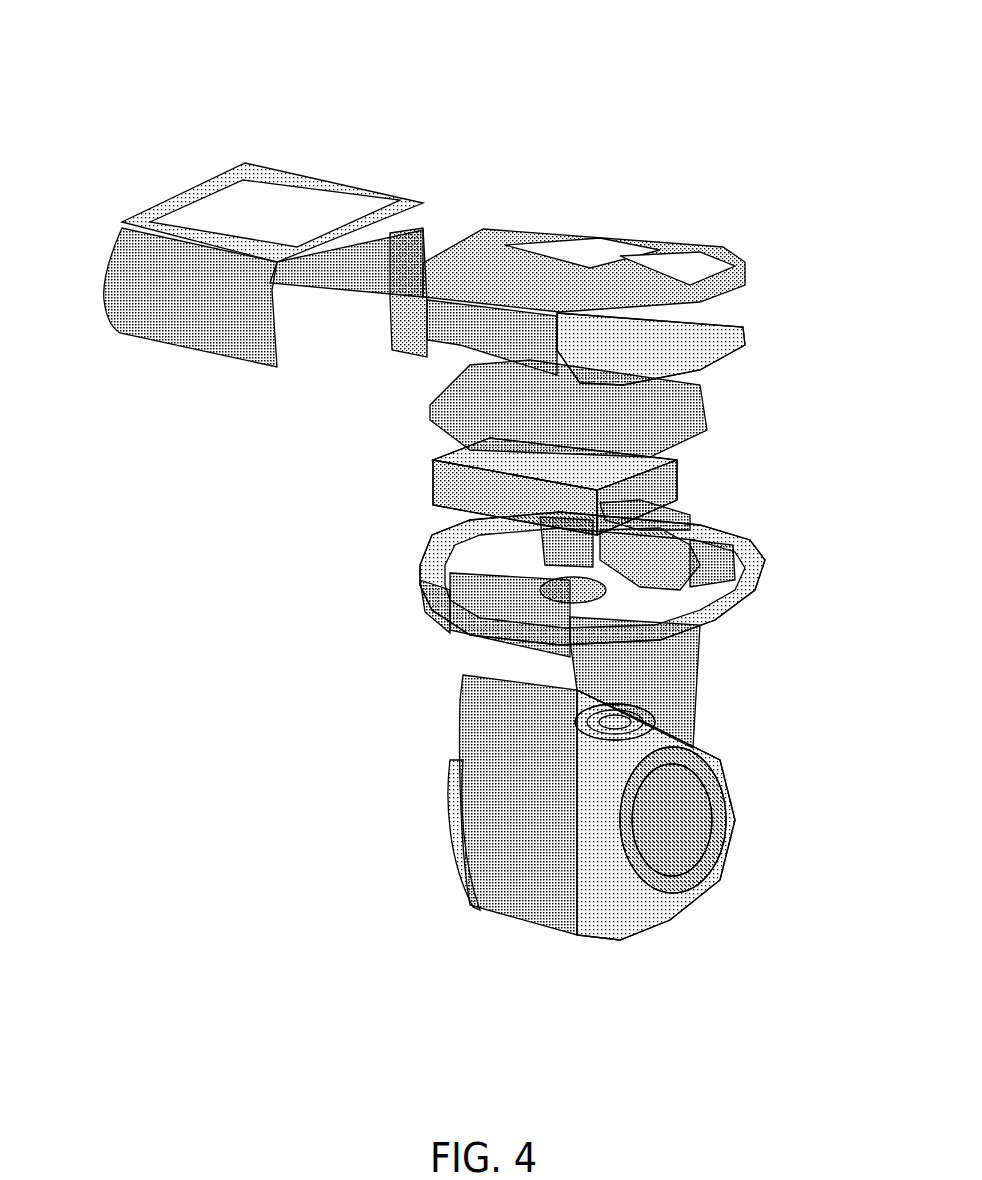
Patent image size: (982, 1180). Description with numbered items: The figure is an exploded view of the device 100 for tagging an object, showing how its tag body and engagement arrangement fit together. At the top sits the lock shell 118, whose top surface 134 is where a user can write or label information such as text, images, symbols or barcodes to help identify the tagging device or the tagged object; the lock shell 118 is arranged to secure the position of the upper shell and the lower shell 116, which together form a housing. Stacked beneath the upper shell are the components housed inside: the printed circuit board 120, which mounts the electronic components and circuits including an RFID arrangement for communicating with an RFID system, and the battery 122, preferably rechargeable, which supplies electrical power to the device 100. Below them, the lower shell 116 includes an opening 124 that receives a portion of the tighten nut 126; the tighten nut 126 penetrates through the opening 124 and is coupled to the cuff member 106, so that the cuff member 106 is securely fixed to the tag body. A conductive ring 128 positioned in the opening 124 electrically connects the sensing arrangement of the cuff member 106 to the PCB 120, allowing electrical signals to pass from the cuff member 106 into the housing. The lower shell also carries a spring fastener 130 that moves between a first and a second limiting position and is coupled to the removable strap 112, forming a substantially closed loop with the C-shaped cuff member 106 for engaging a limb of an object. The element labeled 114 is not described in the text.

The device 100 is at (205, 112).
The cuff member 106 is at (452, 787).
The removable strap 112 is at (452, 857).
The frame 114 is at (400, 350).
The lower shell 116 is at (420, 608).
The lock shell 118 is at (118, 330).
The printed circuit board 120 is at (432, 407).
The battery 122 is at (433, 490).
The opening 124 is at (575, 603).
The tighten nut 126 is at (420, 587).
The conductive ring 128 is at (530, 647).
The spring fastener 130 is at (672, 522).
The top surface 134 is at (313, 160).